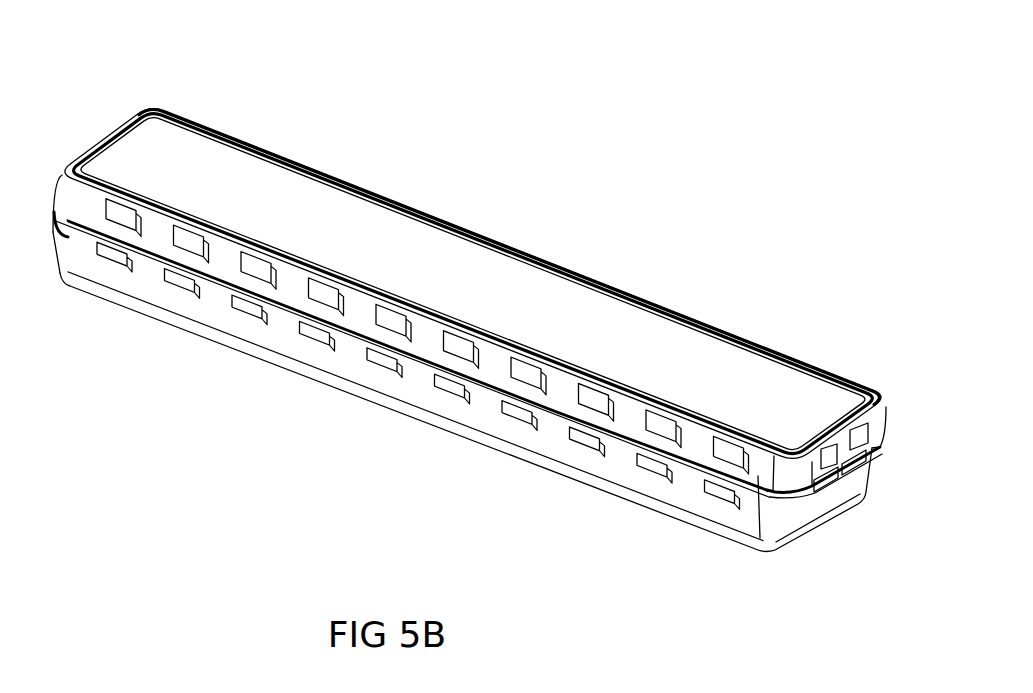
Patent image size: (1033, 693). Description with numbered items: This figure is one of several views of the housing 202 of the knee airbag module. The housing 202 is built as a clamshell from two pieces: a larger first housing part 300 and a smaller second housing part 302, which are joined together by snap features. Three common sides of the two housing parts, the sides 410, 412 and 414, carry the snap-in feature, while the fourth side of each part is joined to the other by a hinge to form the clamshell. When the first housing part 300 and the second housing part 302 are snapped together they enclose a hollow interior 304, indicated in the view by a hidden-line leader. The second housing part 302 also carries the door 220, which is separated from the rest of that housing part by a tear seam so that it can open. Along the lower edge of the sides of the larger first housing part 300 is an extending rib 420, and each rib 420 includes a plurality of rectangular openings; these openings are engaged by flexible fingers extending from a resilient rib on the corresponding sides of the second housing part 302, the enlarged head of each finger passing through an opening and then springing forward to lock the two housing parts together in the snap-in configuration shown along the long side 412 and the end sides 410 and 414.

The housing 202 is at (230, 177).
The door 220 is at (387, 247).
The first housing part 300 is at (882, 458).
The second housing part 302 is at (705, 363).
The hollow interior 304 is at (546, 298).
The side 410 is at (810, 513).
The side 412 is at (420, 393).
The side 414 is at (42, 200).
The extending rib 420 is at (686, 457).